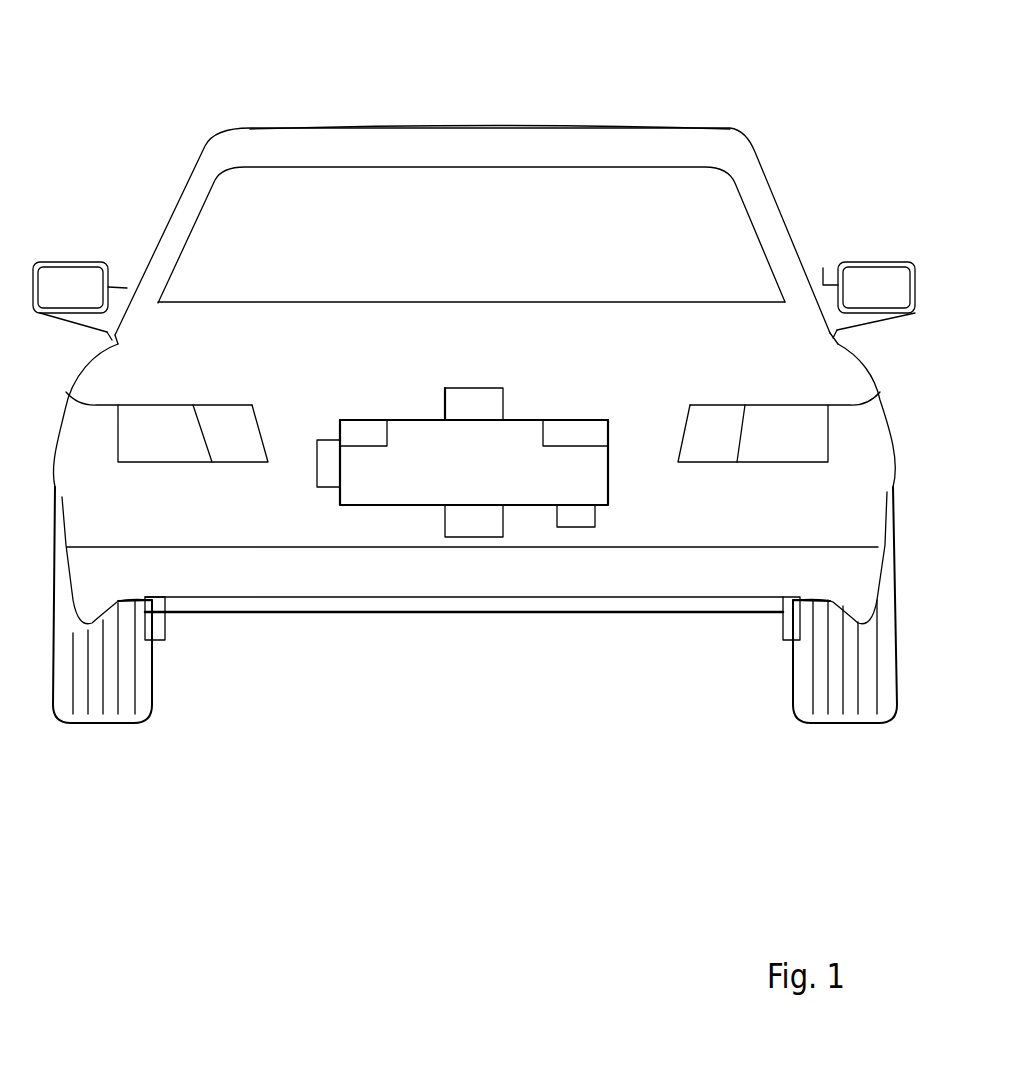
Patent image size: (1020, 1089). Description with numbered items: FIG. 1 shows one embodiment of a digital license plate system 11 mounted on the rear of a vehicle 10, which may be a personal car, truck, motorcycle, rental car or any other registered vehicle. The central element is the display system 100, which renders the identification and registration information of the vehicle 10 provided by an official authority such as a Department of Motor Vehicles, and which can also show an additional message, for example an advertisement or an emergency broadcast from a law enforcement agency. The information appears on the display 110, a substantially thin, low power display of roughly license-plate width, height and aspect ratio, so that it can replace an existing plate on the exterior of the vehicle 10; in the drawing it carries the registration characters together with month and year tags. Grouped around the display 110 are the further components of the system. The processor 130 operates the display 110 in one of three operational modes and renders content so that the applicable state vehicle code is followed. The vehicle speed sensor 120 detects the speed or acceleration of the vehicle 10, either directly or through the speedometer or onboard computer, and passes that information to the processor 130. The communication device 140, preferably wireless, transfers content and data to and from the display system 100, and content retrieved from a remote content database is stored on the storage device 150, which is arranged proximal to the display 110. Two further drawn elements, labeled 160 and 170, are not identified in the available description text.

The vehicle 10 is at (812, 162).
The digital license plate system 11 is at (551, 112).
The display system 100 is at (329, 409).
The display 110 is at (614, 440).
The vehicle speed sensor 120 is at (441, 516).
The processor 130 is at (322, 492).
The communication device 140 is at (599, 512).
The storage device 150 is at (493, 386).
The upper housing 160 is at (453, 386).
The plate frame 170 is at (439, 404).